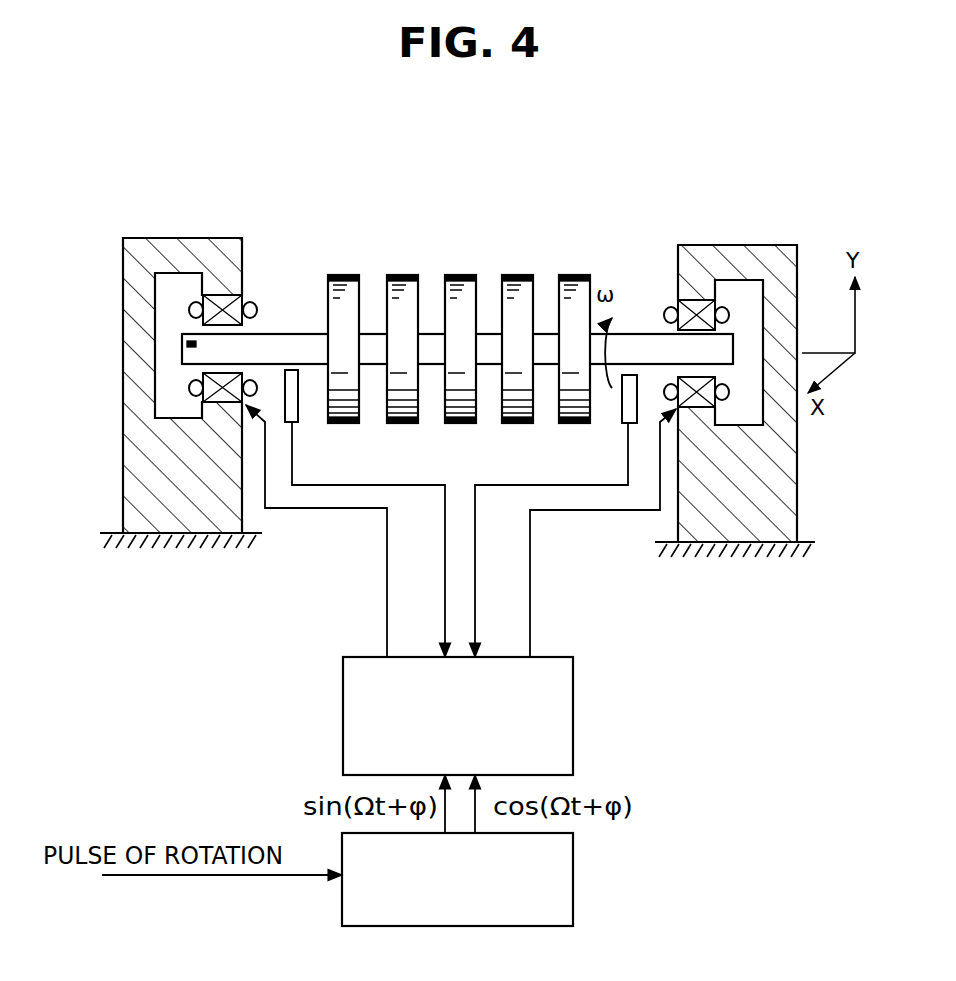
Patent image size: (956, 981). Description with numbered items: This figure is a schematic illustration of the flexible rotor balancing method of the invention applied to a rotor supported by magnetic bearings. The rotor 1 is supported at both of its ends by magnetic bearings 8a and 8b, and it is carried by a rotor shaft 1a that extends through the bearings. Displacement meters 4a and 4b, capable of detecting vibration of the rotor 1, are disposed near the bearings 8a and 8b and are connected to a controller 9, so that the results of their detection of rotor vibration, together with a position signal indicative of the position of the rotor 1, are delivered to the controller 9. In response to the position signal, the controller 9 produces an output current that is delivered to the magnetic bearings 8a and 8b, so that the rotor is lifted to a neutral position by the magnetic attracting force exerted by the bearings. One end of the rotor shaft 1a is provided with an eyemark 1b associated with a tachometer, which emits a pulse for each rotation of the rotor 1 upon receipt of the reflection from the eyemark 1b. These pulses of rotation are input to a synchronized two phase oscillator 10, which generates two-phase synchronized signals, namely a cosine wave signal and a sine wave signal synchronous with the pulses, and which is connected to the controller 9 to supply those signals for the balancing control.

The rotor 1 is at (422, 273).
The rotor shaft 1a is at (275, 334).
The eyemark 1b is at (190, 338).
The displacement meter 4a is at (622, 423).
The displacement meter 4b is at (298, 422).
The magnetic bearing 8a is at (678, 305).
The magnetic bearing 8b is at (243, 293).
The controller 9 is at (575, 683).
The synchronized two phase oscillator 10 is at (575, 866).